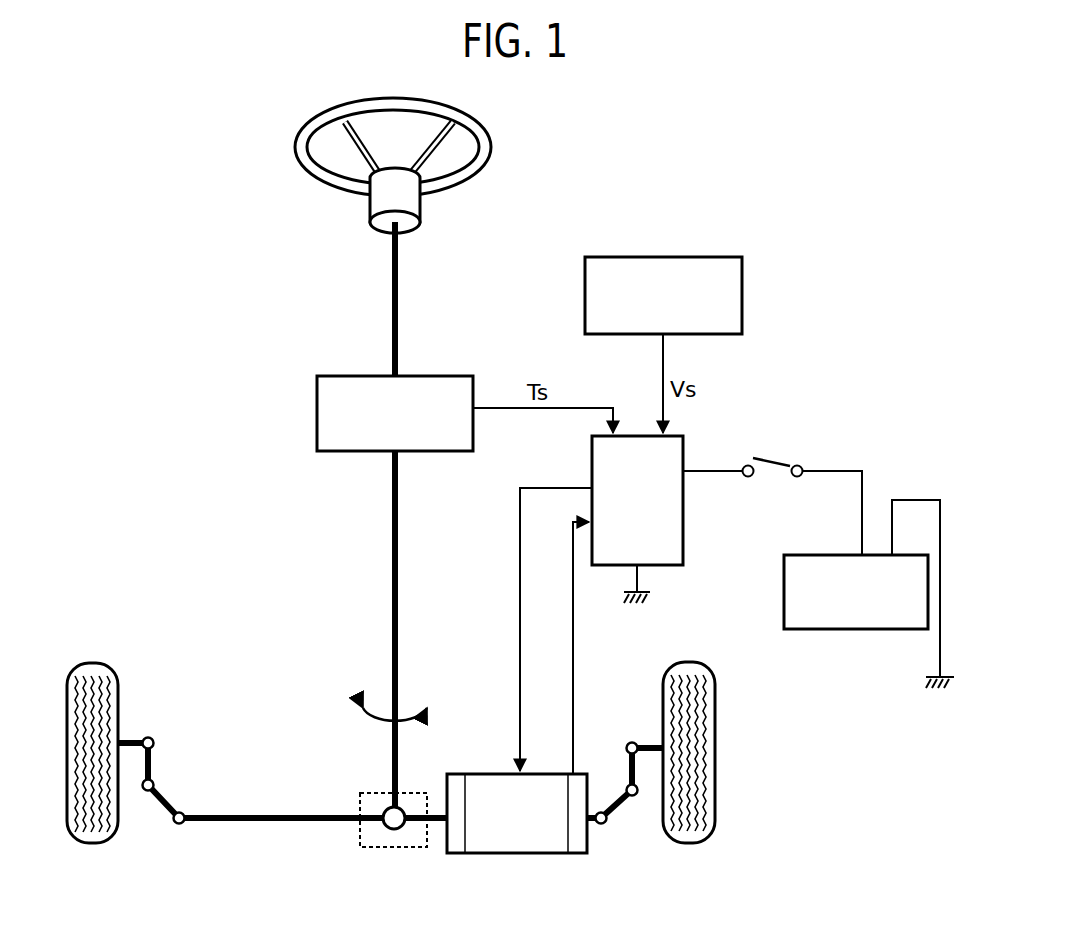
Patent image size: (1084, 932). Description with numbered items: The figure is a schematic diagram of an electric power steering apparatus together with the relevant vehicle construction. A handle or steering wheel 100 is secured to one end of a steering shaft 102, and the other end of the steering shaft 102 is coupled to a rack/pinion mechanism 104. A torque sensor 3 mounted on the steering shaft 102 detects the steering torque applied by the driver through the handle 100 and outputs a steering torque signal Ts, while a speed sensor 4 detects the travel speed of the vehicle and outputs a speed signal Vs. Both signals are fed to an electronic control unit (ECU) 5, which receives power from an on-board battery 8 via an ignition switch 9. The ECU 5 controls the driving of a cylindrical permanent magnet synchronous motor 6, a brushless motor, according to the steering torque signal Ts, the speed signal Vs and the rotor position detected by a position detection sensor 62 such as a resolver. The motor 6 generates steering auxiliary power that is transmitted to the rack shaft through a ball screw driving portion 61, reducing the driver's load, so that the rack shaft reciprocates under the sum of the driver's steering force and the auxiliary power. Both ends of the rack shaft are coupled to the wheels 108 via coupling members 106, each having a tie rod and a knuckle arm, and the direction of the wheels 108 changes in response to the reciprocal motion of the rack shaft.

The handle (steering wheel) 100 is at (492, 147).
The steering shaft 102 is at (398, 298).
The torque sensor 3 is at (317, 395).
The speed sensor 4 is at (665, 257).
The electronic control unit (ECU) 5 is at (683, 520).
The ignition switch 9 is at (782, 445).
The on-board battery 8 is at (862, 629).
The cylindrical permanent magnet synchronous motor 6 is at (517, 841).
The ball screw driving portion 61 is at (457, 853).
The position detection sensor 62 is at (578, 853).
The rack/pinion mechanism 104 is at (395, 847).
The coupling members 106 is at (185, 782).
The wheels 108 is at (95, 843).